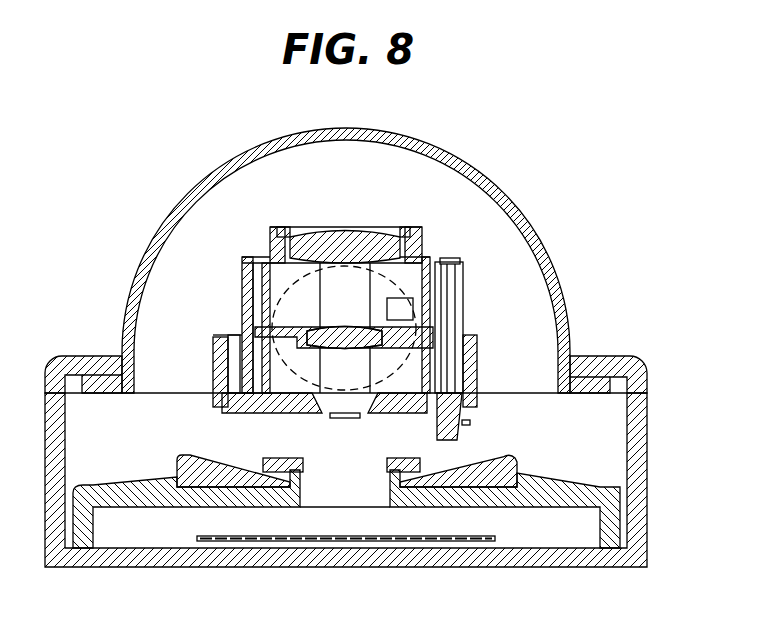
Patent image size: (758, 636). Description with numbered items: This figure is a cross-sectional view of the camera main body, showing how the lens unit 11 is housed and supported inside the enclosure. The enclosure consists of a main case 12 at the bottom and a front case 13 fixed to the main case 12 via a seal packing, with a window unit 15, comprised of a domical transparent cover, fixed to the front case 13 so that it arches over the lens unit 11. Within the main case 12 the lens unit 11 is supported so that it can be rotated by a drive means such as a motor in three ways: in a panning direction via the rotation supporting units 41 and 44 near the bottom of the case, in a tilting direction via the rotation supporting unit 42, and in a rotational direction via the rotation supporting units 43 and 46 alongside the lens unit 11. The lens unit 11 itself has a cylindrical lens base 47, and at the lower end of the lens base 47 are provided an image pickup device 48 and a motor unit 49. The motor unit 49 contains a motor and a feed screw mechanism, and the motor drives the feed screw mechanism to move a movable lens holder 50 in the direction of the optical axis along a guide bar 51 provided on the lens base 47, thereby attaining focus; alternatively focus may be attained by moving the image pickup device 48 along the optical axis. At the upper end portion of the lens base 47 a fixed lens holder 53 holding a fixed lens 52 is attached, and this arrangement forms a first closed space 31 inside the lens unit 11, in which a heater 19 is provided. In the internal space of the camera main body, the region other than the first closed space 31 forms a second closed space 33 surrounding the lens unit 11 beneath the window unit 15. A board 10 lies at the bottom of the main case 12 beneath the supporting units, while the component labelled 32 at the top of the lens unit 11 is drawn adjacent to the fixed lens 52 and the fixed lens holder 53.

The circuit board 10 is at (435, 541).
The lens unit 11 is at (263, 241).
The main case 12 is at (638, 527).
The front case 13 is at (632, 362).
The window unit 15 is at (233, 160).
The heater 19 is at (413, 308).
The first closed space 31 is at (293, 290).
The front lens holding frame 32 is at (297, 227).
The second closed space 33 is at (550, 438).
The rotation supporting unit 41 is at (610, 493).
The rotation supporting unit 42 is at (190, 458).
The rotation supporting unit 43 is at (213, 363).
The rotation supporting unit 44 is at (280, 472).
The rotation supporting unit 46 is at (228, 335).
The lens base 47 is at (240, 300).
The image pickup device 48 is at (313, 413).
The motor unit 49 is at (465, 420).
The movable lens holder 50 is at (467, 338).
The guide bar 51 is at (262, 275).
The fixed lens 52 is at (350, 240).
The fixed lens holder 53 is at (412, 245).